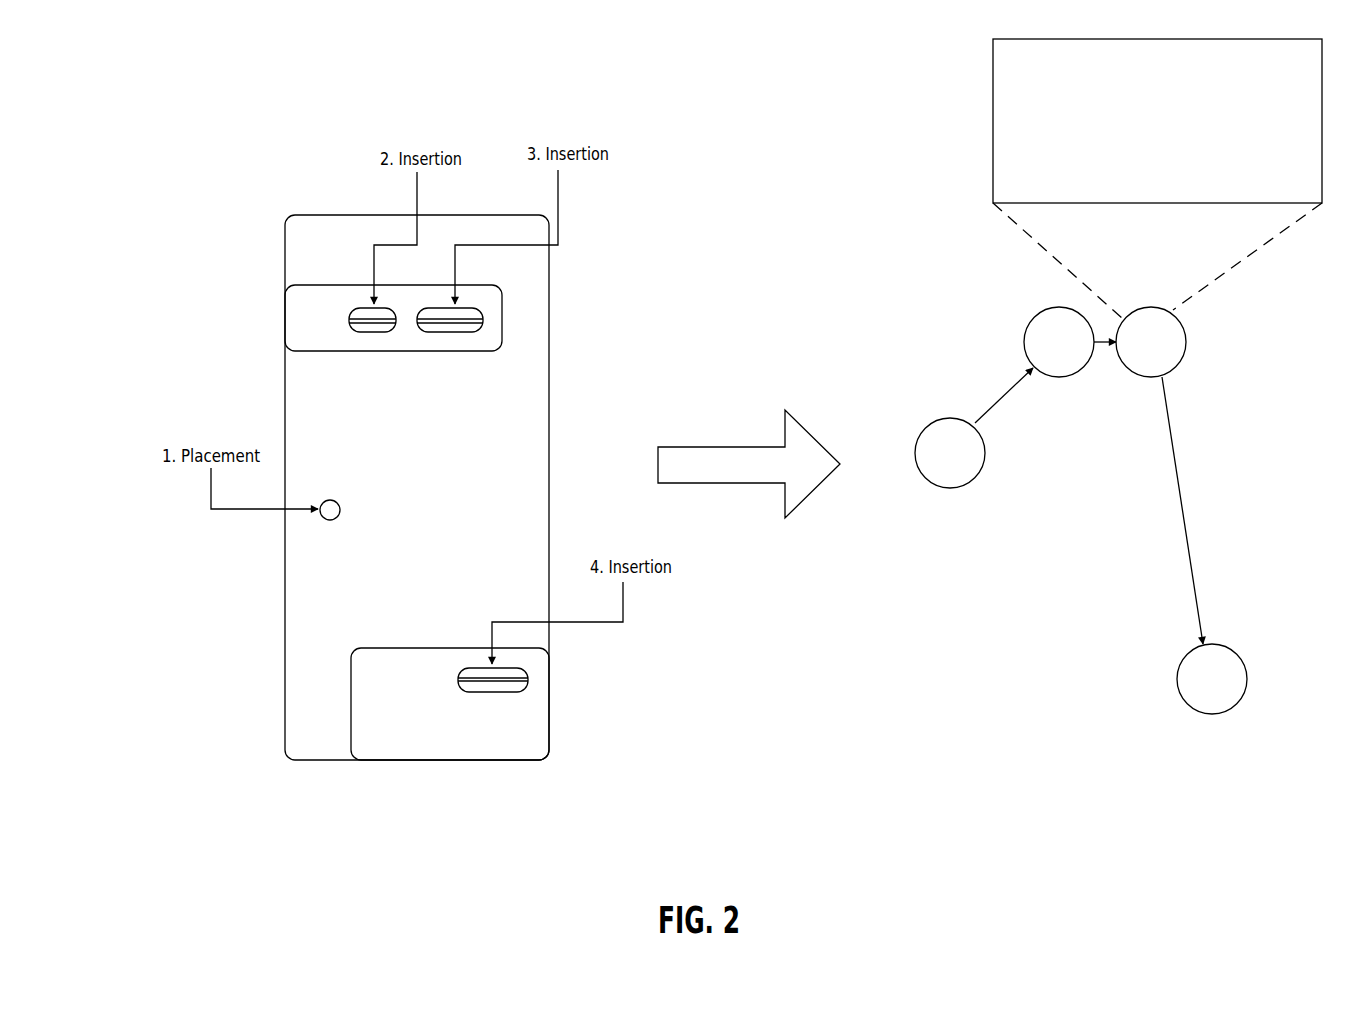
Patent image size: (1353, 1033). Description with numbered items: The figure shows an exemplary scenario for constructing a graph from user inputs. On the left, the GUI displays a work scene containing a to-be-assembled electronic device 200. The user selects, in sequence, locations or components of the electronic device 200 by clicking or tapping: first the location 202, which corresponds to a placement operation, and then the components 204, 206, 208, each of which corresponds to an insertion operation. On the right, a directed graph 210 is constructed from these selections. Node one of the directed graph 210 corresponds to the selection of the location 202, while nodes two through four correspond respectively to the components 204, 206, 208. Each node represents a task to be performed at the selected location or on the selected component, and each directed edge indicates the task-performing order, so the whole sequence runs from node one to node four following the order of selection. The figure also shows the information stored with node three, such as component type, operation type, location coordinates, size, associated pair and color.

The to-be-assembled electronic device 200 is at (285, 265).
The location 202 is at (337, 518).
The component 204 is at (373, 326).
The component 206 is at (458, 326).
The component 208 is at (485, 684).
The directed graph 210 is at (1030, 564).